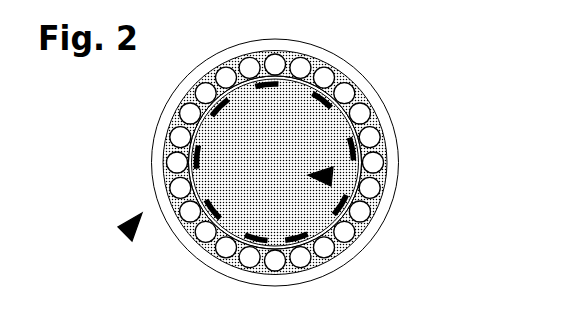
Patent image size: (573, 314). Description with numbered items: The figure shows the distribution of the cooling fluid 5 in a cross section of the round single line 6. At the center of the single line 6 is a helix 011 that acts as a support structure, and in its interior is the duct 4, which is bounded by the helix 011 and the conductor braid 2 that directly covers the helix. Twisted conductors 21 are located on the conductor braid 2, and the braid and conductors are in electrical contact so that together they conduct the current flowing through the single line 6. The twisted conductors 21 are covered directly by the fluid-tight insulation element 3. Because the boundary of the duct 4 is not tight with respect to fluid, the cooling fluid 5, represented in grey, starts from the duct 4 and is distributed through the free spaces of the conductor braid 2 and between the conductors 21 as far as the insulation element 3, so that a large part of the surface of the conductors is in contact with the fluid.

The helix 011 is at (353, 102).
The conductor braid 2 is at (357, 147).
The twisted conductors 21 is at (372, 163).
The insulation element 3 is at (386, 203).
The duct 4 is at (333, 182).
The cooling fluid 5 is at (290, 210).
The single line 6 is at (126, 233).